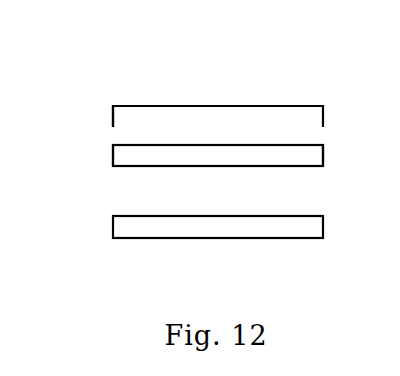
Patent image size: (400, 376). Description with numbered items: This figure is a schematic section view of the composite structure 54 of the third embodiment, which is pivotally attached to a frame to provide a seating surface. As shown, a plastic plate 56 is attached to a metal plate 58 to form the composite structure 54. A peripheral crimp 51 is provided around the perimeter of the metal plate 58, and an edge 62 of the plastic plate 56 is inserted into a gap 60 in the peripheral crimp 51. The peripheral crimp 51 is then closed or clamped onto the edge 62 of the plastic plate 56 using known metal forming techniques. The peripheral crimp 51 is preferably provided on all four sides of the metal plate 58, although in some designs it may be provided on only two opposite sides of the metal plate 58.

The peripheral crimp 51 is at (112, 165).
The composite structure 54 is at (158, 241).
The plastic plate 56 is at (190, 107).
The metal plate 58 is at (300, 148).
The gap 60 is at (109, 146).
The edge 62 is at (115, 124).